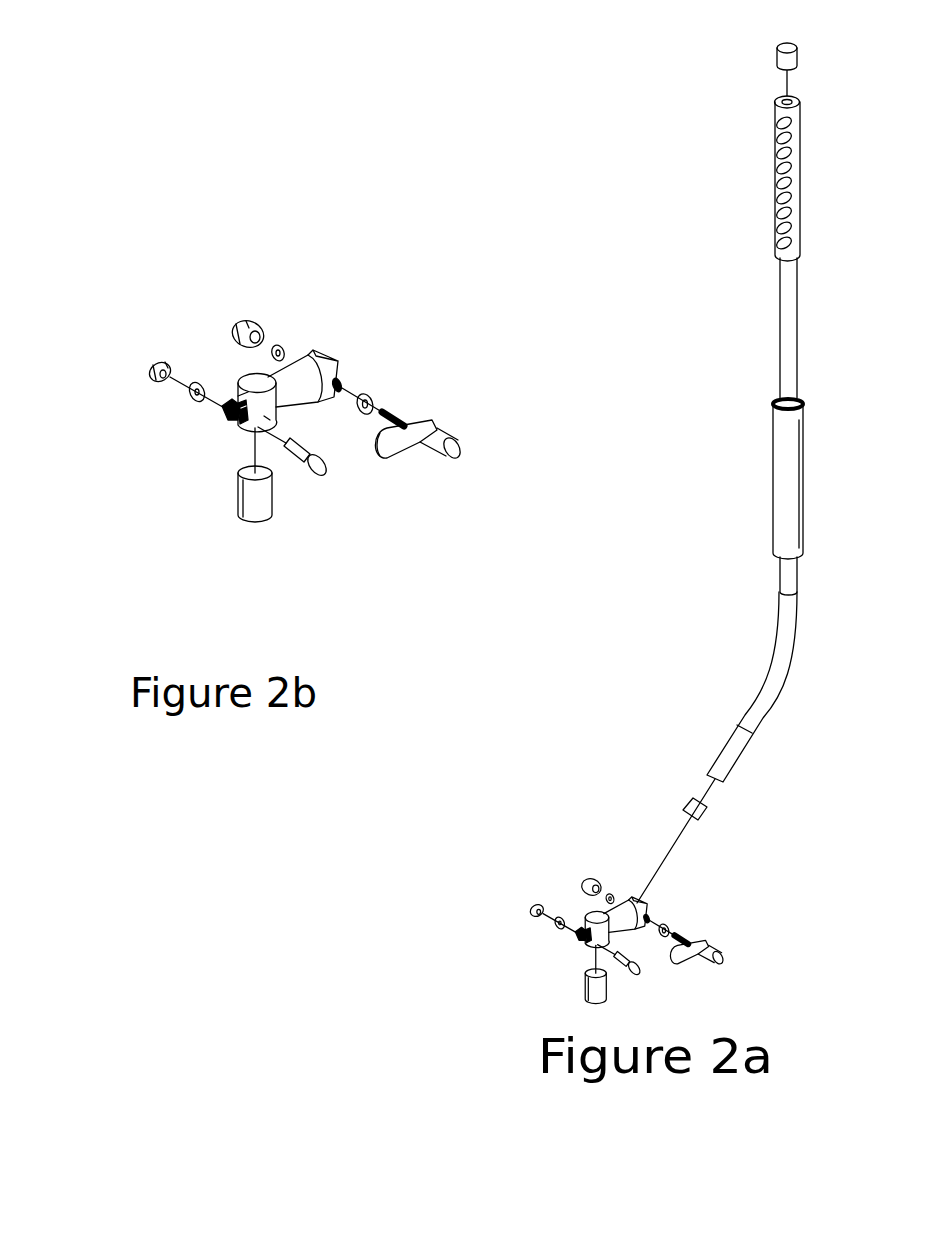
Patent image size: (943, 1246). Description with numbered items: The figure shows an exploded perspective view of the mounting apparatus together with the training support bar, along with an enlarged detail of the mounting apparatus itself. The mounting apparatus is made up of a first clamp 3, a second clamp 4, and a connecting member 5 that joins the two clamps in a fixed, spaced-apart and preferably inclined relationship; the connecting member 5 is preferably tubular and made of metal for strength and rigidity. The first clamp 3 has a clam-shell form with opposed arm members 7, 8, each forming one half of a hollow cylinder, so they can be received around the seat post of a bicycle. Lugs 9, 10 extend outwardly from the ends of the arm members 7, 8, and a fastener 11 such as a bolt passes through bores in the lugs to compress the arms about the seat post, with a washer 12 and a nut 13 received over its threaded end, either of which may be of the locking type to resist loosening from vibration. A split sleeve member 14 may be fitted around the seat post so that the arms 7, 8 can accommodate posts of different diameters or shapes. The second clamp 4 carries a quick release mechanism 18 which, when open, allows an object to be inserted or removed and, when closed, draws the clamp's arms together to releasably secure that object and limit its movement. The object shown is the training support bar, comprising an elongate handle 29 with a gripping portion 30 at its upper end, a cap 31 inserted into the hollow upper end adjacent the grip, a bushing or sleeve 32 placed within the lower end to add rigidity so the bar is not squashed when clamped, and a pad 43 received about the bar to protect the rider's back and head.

In FIG. 2B, the first clamp 3 is at (244, 379).
In FIG. 2B, the second clamp 4 is at (287, 394).
In FIG. 2B, the connecting member 5 is at (297, 368).
In FIG. 2B, the arm member 7 is at (233, 401).
In FIG. 2B, the arm member 8 is at (267, 417).
In FIG. 2B, the lug 9 is at (231, 414).
In FIG. 2B, the lug 10 is at (238, 422).
In FIG. 2B, the fastener 11 is at (313, 476).
In FIG. 2B, the washer 12 is at (183, 399).
In FIG. 2B, the nut 13 is at (152, 366).
In FIG. 2B, the split sleeve member 14 is at (263, 518).
In FIG. 2B, the quick release mechanism 18 is at (447, 428).
In FIG. 2A, the elongate handle 29 is at (790, 332).
In FIG. 2A, the gripping portion 30 is at (772, 168).
In FIG. 2A, the cap 31 is at (777, 53).
In FIG. 2A, the bushing or sleeve 32 is at (705, 813).
In FIG. 2A, the pad 43 is at (785, 478).